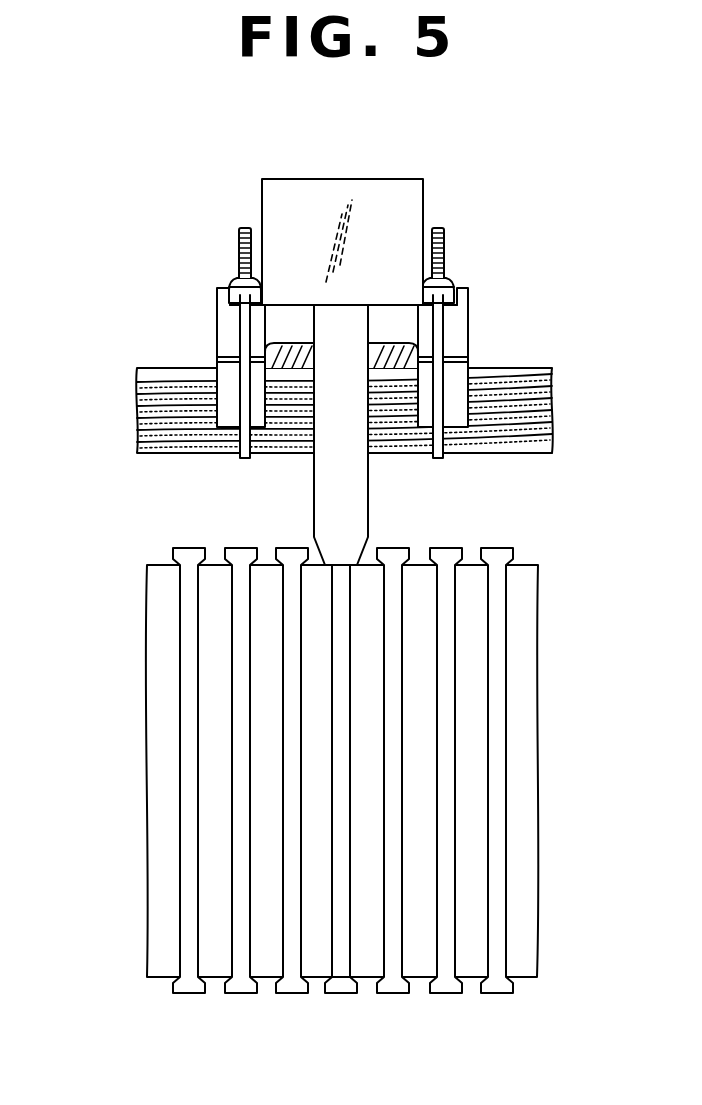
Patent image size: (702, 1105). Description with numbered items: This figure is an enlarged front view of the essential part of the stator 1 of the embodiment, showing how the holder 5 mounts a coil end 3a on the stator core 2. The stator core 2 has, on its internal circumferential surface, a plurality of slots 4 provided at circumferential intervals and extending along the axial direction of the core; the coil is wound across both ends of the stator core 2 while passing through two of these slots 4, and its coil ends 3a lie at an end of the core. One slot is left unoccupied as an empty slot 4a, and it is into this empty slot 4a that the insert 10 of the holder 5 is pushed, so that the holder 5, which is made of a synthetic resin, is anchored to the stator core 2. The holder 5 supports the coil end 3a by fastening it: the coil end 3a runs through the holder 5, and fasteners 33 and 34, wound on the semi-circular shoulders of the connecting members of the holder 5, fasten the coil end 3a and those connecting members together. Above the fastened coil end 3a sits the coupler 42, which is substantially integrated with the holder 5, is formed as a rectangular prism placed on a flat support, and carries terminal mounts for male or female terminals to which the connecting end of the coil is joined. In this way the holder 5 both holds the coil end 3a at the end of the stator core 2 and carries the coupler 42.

The connector 1 is at (284, 765).
The stator core 2 is at (368, 957).
The coil end 3a is at (506, 368).
The slot 4 is at (188, 930).
The empty slot 4a is at (341, 922).
The holder 5 is at (390, 331).
The insert 10 is at (325, 500).
The fastener 33 is at (445, 258).
The fastener 34 is at (240, 258).
The coupler 42 is at (423, 203).